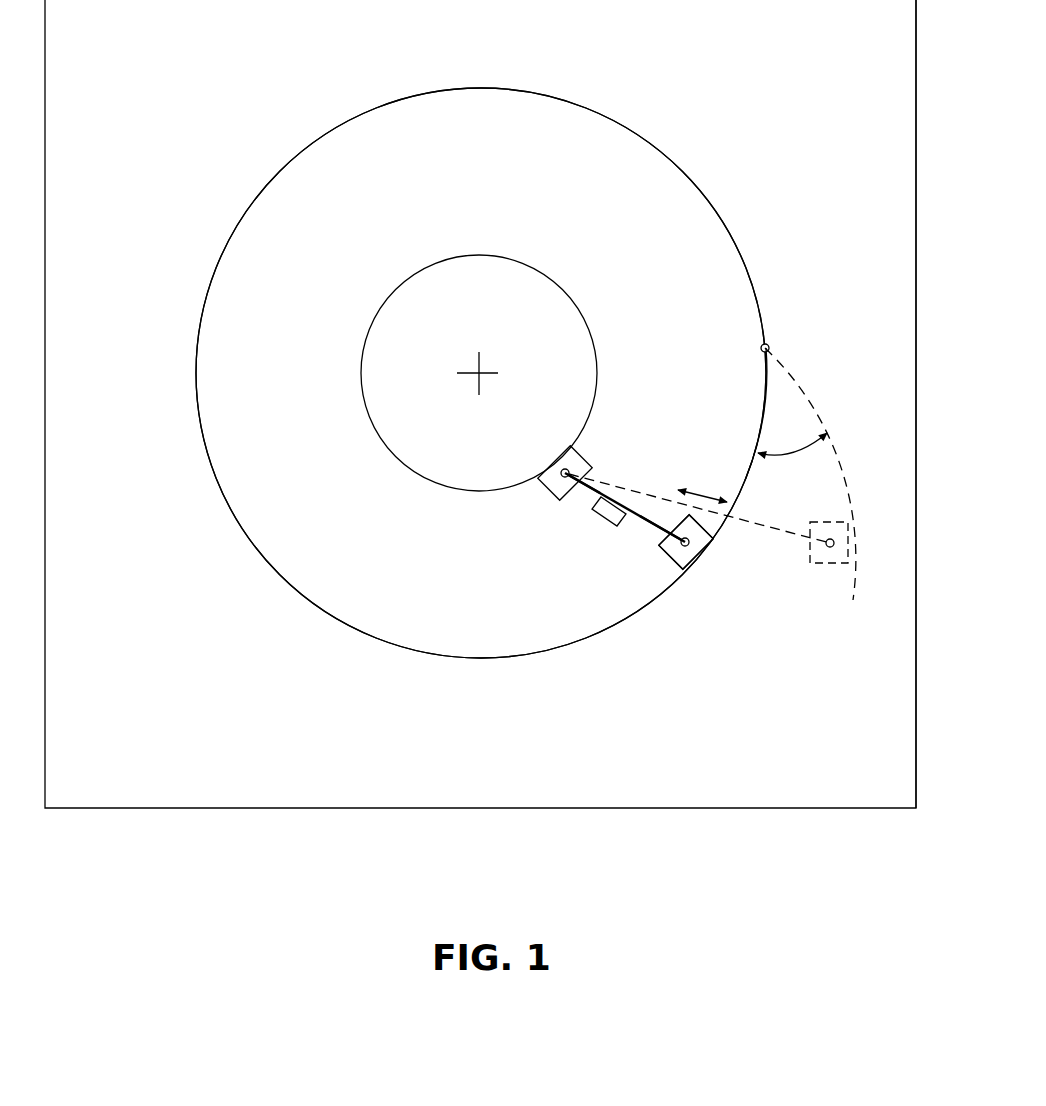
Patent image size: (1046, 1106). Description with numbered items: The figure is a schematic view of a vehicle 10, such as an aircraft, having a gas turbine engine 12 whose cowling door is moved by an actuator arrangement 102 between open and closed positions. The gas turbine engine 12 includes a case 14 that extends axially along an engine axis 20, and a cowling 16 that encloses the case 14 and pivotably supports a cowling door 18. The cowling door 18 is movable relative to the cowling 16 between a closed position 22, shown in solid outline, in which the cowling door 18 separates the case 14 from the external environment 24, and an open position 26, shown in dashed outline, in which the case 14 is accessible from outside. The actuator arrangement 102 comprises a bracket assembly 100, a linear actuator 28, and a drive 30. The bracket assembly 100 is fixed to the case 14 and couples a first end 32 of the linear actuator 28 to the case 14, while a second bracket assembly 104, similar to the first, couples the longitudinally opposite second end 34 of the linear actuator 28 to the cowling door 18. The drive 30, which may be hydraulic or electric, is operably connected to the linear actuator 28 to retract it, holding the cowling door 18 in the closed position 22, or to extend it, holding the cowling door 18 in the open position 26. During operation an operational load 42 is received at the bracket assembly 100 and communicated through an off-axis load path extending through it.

The vehicle 10 is at (126, 808).
The gas turbine engine 12 is at (653, 122).
The case 14 is at (423, 477).
The cowling 16 is at (358, 630).
The cowling door 18 is at (760, 407).
The engine axis 20 is at (497, 370).
The closed position 22 is at (683, 570).
The external environment 24 is at (961, 631).
The open position 26 is at (899, 539).
The linear actuator 28 is at (638, 518).
The drive 30 is at (608, 520).
The first end 32 is at (608, 482).
The second end 34 is at (650, 540).
The operational load 42 is at (703, 492).
The bracket assembly 100 is at (580, 452).
The actuator arrangement 102 is at (575, 508).
The second bracket assembly 104 is at (668, 557).